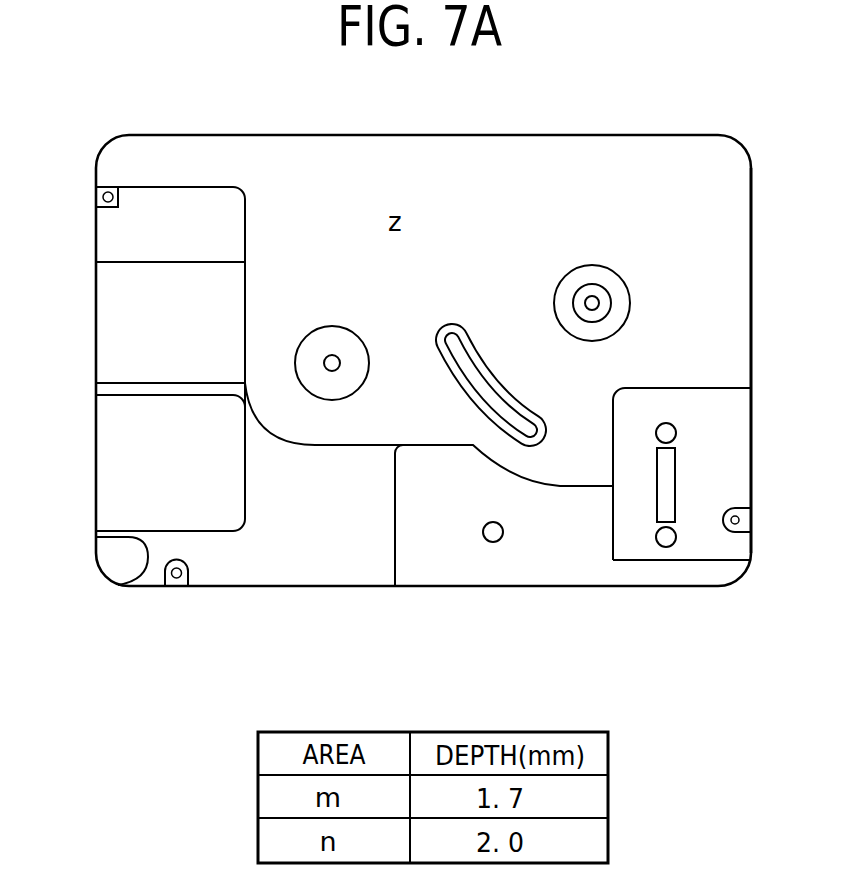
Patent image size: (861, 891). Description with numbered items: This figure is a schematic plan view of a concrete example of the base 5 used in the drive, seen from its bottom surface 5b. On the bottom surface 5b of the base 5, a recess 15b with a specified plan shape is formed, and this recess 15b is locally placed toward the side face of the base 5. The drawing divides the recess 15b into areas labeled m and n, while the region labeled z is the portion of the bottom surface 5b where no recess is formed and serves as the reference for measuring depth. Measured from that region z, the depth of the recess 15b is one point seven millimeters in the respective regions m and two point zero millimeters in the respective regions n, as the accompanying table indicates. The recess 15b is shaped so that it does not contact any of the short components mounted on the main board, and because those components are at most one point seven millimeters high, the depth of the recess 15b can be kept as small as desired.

The base 5 is at (716, 112).
The bottom surface of the base 5b is at (758, 250).
The recess 15b is at (425, 424).